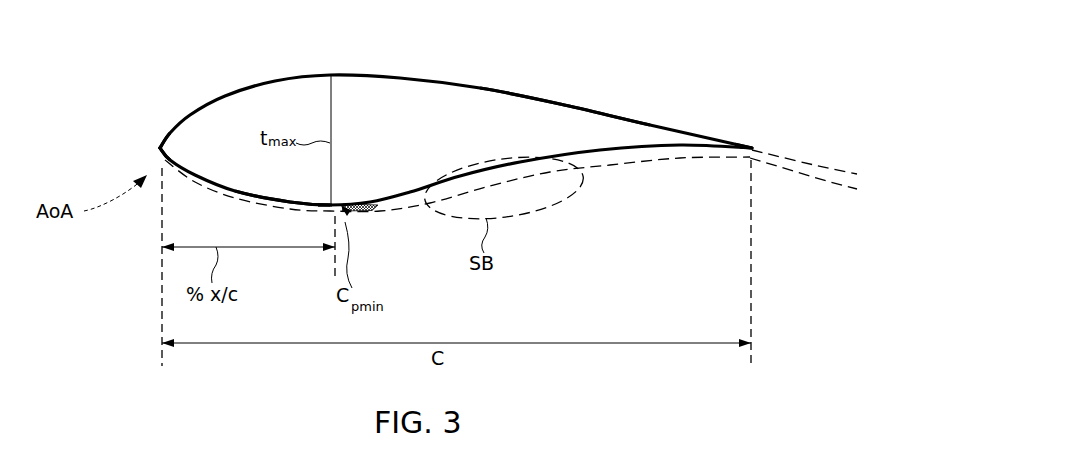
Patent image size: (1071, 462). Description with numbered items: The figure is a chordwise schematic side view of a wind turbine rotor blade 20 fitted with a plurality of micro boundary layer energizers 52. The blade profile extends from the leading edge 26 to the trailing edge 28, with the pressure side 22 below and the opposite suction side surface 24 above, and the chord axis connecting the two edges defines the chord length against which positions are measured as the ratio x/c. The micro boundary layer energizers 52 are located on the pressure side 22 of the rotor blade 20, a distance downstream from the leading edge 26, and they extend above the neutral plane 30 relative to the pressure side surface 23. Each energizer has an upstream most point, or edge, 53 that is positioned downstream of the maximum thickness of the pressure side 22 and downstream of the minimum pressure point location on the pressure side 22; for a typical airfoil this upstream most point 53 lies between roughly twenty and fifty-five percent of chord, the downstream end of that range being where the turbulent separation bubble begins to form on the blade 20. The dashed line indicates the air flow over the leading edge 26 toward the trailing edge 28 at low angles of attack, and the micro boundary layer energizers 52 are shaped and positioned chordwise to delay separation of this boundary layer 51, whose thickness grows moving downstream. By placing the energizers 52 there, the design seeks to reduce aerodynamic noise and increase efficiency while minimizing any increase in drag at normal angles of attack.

The rotor blade 20 is at (500, 87).
The pressure side 22 is at (272, 208).
The pressure side surface 23 is at (322, 210).
The suction side surface 24 is at (581, 103).
The leading edge 26 is at (157, 147).
The trailing edge 28 is at (762, 148).
The neutral plane 30 is at (605, 155).
The boundary layer 51 is at (221, 196).
The micro boundary layer energizers 52 is at (379, 212).
The upstream most point 53 is at (352, 214).